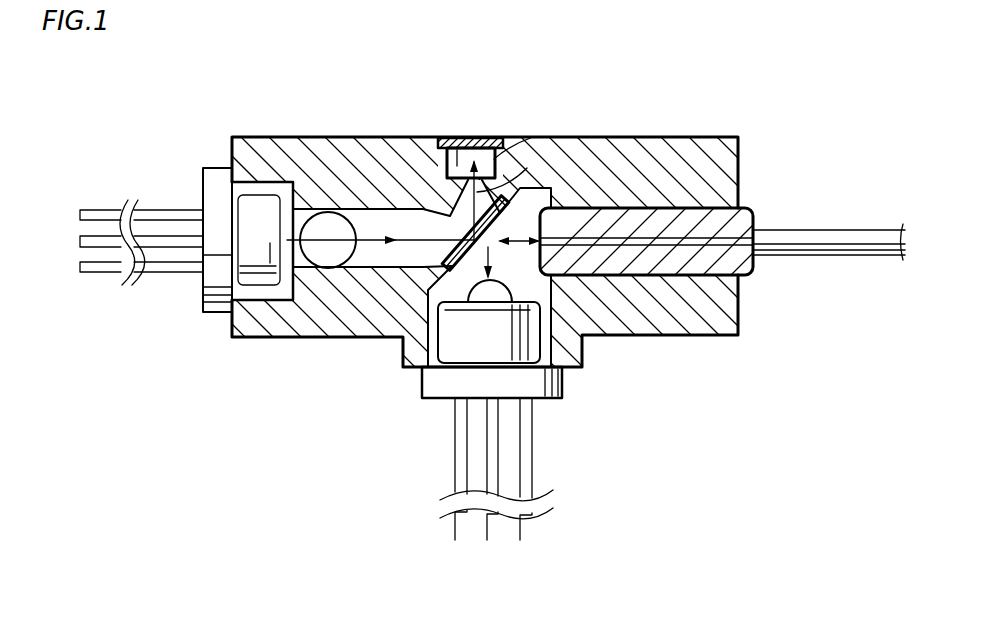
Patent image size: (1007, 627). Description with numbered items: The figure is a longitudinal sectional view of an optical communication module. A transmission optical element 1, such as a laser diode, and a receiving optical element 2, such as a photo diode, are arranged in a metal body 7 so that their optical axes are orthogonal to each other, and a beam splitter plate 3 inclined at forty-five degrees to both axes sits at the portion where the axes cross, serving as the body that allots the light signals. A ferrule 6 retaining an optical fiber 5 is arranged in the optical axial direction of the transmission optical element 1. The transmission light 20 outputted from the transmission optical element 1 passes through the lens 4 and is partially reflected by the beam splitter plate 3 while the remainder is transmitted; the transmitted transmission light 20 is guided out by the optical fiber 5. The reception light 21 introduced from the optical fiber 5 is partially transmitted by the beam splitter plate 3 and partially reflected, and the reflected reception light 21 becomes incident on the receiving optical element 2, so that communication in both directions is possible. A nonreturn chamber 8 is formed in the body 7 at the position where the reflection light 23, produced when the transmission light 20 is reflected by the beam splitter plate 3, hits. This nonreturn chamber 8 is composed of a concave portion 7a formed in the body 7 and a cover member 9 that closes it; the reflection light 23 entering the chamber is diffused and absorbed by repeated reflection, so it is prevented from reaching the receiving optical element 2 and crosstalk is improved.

The transmission optical element 1 is at (210, 187).
The receiving optical element 2 is at (430, 376).
The beam splitter plate 3 is at (496, 223).
The lens 4 is at (317, 228).
The optical fiber 5 is at (748, 262).
The ferrule 6 is at (737, 222).
The metal body 7 is at (352, 148).
The concave portion 7a is at (517, 158).
The nonreturn chamber 8 is at (452, 142).
The cover member 9 is at (477, 146).
The transmission light 20 is at (366, 242).
The reception light 21 is at (491, 263).
The reflection light 23 is at (510, 196).